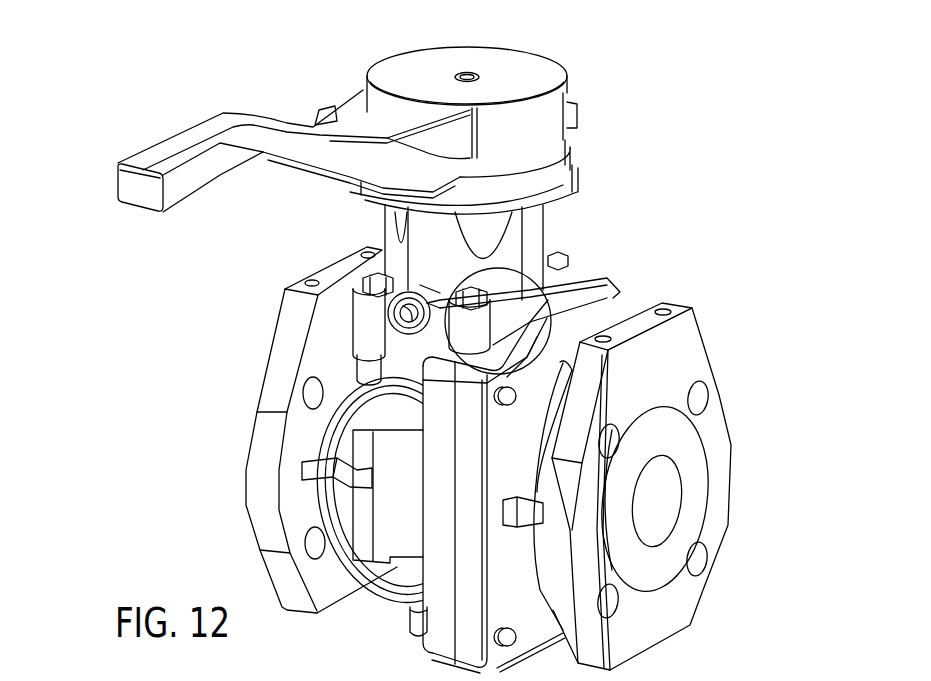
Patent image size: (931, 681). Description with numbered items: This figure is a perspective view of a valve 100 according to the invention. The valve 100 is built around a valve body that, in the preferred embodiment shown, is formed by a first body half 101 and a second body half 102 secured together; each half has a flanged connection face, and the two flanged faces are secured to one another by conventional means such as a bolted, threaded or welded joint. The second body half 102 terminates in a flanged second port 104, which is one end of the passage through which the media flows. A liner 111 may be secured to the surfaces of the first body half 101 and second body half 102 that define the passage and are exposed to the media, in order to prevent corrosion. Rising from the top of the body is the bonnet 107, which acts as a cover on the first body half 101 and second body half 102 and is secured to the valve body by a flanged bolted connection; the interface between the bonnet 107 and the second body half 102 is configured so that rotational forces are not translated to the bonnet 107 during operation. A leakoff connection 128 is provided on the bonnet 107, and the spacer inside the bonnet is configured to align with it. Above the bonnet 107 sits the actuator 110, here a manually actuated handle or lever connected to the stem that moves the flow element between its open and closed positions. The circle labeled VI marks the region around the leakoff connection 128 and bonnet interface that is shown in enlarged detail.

The valve 100 is at (208, 82).
The actuator 110 is at (202, 173).
The bonnet 107 is at (536, 241).
The detail view VI circle VI is at (540, 296).
The leakoff connection 128 is at (400, 318).
The second body half 102 is at (583, 317).
The first body half 101 is at (277, 395).
The liner 111 is at (690, 450).
The second port 104 is at (657, 507).